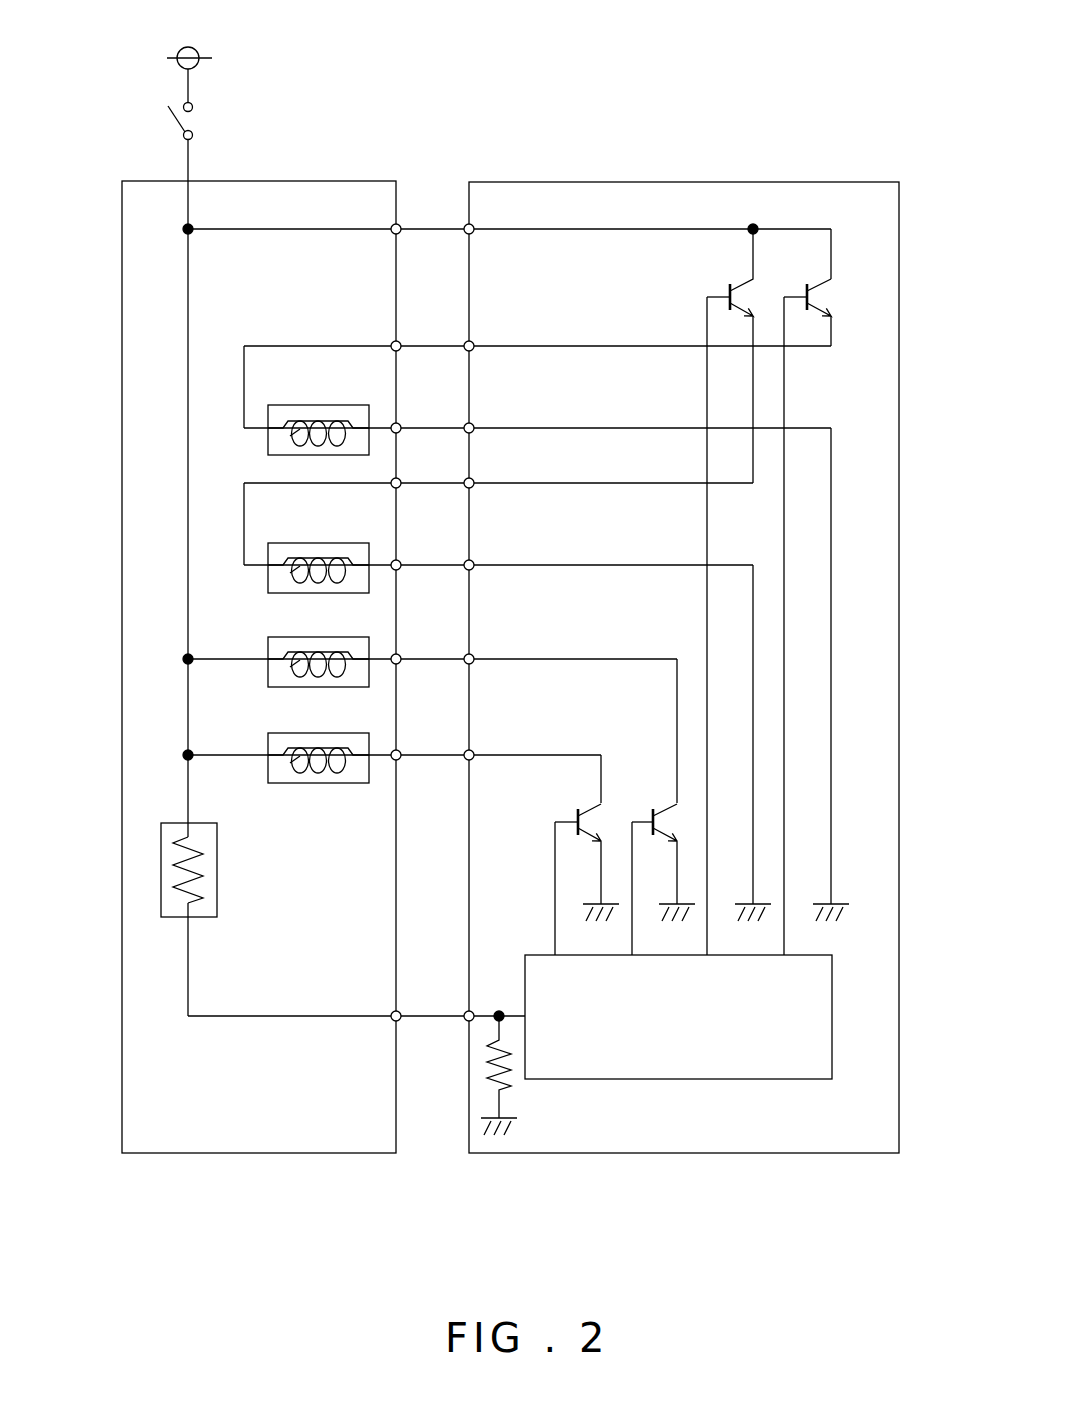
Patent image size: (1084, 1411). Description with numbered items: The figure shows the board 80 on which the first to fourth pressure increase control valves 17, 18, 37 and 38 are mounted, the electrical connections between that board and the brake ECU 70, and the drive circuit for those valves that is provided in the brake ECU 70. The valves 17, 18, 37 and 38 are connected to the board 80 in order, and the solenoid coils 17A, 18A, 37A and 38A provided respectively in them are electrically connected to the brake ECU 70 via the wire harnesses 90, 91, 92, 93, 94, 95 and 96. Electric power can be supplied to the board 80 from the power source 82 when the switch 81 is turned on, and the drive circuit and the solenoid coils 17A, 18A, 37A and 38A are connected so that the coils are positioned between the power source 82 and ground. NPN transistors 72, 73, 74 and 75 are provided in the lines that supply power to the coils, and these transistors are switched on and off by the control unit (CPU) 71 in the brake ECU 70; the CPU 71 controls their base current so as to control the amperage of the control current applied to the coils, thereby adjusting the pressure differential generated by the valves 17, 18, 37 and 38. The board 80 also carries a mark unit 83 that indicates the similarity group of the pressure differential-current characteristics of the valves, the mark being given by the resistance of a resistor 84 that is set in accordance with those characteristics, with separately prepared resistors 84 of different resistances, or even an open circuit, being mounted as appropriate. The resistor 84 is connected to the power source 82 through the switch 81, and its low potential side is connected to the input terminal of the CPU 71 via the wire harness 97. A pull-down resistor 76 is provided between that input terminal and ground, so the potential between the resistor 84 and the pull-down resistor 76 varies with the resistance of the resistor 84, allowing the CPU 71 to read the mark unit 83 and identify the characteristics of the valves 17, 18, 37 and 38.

The power source 82 is at (200, 51).
The switch 81 is at (172, 118).
The board 80 is at (332, 181).
The brake ECU 70 is at (824, 182).
The wire harness 90 is at (420, 229).
The wire harness 91 is at (420, 346).
The wire harness 92 is at (420, 428).
The wire harness 93 is at (420, 483).
The wire harness 94 is at (420, 565).
The wire harness 95 is at (420, 659).
The wire harness 96 is at (420, 755).
The wire harness 97 is at (420, 1016).
The first pressure increase control valve 17 is at (322, 405).
The solenoid coil 17A is at (290, 433).
The second pressure increase control valve 18 is at (322, 543).
The solenoid coil 18A is at (290, 570).
The third pressure increase control valve 37 is at (322, 637).
The solenoid coil 37A is at (290, 664).
The fourth pressure increase control valve 38 is at (322, 733).
The solenoid coil 38A is at (290, 760).
The NPN transistor 73 is at (726, 297).
The NPN transistor 72 is at (803, 297).
The NPN transistor 75 is at (574, 822).
The NPN transistor 74 is at (649, 822).
The control unit (CPU) 71 is at (730, 1080).
The pull-down resistor 76 is at (490, 1063).
The mark unit 83 is at (218, 873).
The resistor 84 is at (200, 886).